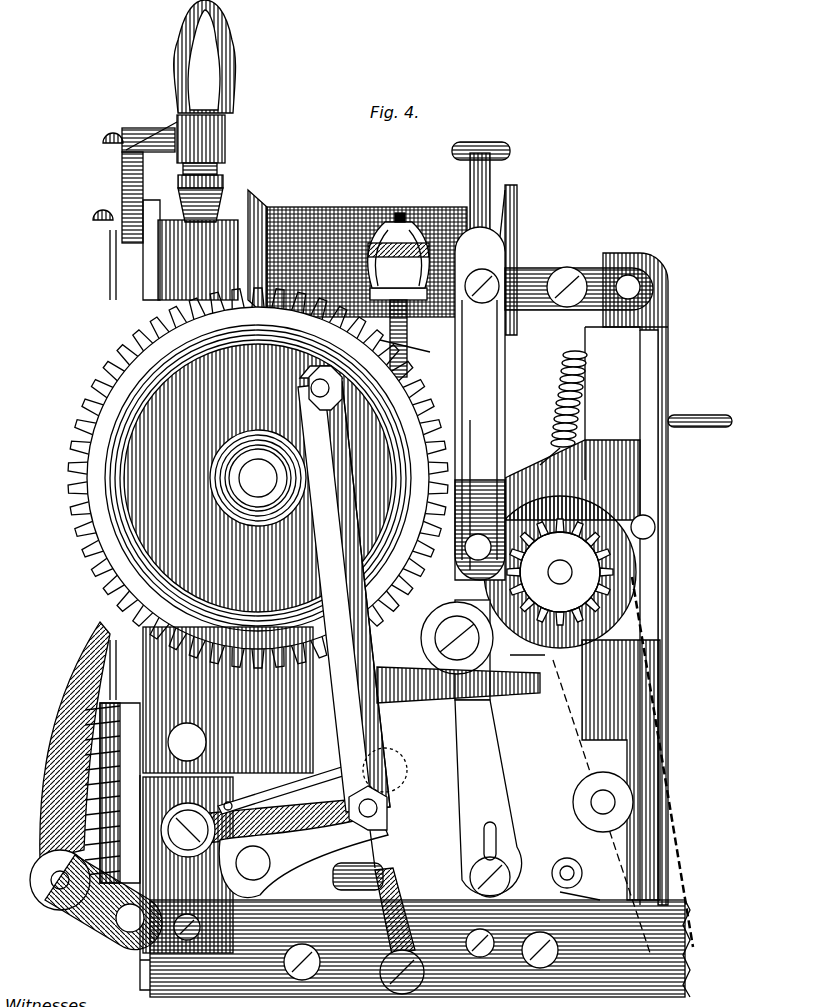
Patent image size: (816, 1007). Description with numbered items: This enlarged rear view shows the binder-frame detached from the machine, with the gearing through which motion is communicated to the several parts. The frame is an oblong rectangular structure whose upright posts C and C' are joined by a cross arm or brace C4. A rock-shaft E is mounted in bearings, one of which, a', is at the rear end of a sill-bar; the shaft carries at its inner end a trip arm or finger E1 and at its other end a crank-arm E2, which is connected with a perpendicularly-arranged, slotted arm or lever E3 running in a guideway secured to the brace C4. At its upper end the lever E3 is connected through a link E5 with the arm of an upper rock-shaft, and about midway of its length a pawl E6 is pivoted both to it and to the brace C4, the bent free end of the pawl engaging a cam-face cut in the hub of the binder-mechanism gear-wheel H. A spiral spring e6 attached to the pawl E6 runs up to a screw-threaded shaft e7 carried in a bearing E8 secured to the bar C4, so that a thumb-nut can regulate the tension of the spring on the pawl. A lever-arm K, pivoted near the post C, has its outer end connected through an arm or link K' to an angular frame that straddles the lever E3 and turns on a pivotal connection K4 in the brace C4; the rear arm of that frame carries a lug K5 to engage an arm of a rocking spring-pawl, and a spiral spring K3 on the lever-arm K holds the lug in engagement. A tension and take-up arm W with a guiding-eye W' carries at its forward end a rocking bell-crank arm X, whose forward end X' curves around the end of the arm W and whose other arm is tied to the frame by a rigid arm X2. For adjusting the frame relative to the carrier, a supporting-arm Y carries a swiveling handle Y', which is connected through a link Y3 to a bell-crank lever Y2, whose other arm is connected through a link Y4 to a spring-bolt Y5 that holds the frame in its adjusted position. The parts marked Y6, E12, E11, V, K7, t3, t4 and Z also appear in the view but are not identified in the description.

The swiveling handle Y' is at (214, 56).
The supporting-arm Y is at (215, 189).
The bell-crank lever Y2 is at (120, 174).
The link Y3 is at (130, 126).
The link Y4 is at (108, 278).
The spring-bolt Y5 is at (90, 765).
The link Y6 is at (303, 856).
The upright post C' is at (198, 260).
The upright post C is at (599, 603).
The cross arm or brace C4 is at (640, 572).
The bearing E8 is at (385, 225).
The screw-threaded shaft e7 is at (404, 215).
The spiral spring e6 is at (410, 340).
The rod E12 is at (510, 152).
The trip arm or finger E1 is at (480, 403).
The link E5 is at (551, 272).
The block E11 is at (480, 530).
The pawl E6 is at (430, 640).
The arm or lever E3 is at (482, 752).
The crank-arm E2 is at (540, 862).
The rock-shaft E is at (578, 866).
The binder-mechanism gear-wheel H is at (251, 478).
The lever V is at (344, 598).
The lever-arm K is at (700, 407).
The spiral spring K3 is at (560, 390).
The pivotal connection K4 is at (630, 517).
The lug or projection K5 is at (536, 658).
The ratchet wheel K7 is at (558, 527).
The arm or link K' is at (458, 685).
The shaft t3 is at (560, 562).
The wheel t4 is at (560, 572).
The tension and take-up arm W is at (270, 819).
The guiding-eye W' is at (170, 822).
The rocking bell-crank arm X is at (386, 767).
The forward end of bell-crank arm X' is at (402, 832).
The rigid arm X2 is at (284, 770).
The link Z is at (394, 880).
The bearing a' is at (580, 905).